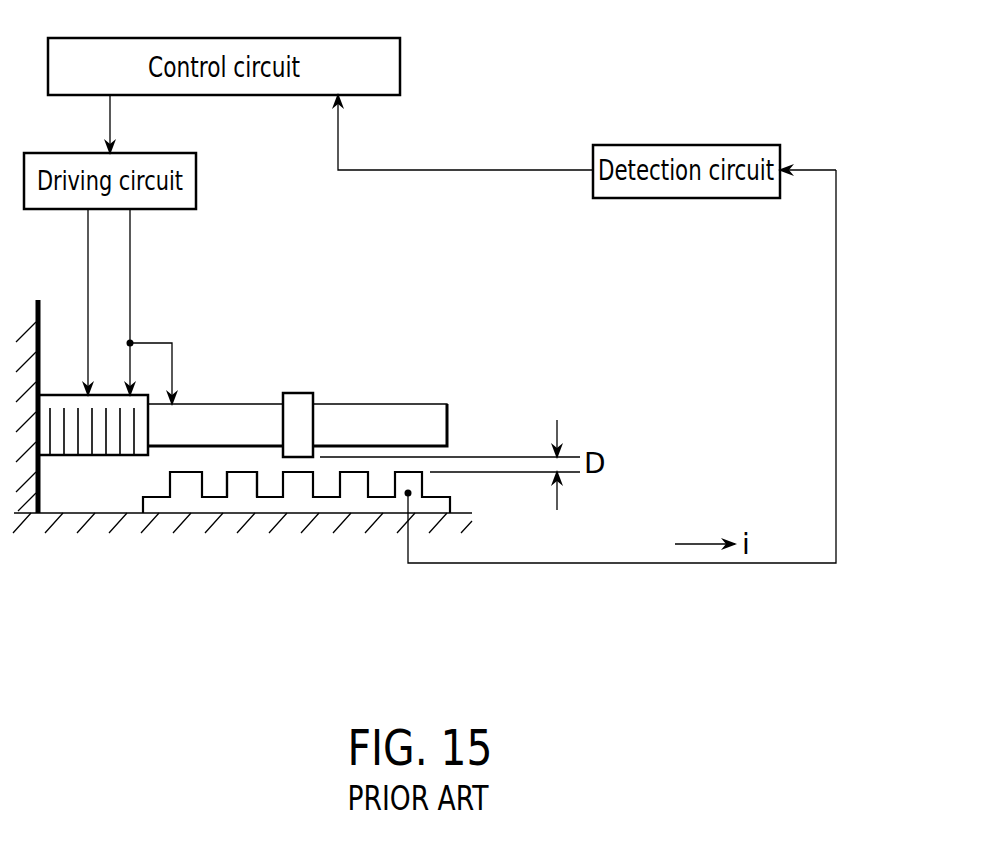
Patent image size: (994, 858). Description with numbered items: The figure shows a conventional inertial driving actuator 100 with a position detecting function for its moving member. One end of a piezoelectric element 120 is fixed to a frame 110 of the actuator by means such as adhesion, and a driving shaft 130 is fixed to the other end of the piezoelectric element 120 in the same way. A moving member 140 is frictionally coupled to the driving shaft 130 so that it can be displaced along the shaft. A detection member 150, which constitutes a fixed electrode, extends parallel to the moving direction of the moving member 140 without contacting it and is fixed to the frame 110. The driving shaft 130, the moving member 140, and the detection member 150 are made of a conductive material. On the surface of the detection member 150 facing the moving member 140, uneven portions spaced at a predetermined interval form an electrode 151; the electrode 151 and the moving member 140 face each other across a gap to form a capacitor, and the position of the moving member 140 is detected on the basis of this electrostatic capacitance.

The inertial driving actuator 100 is at (424, 430).
The frame 110 is at (62, 515).
The piezoelectric element 120 is at (43, 403).
The driving shaft 130 is at (386, 420).
The moving member 140 is at (297, 403).
The detection member 150 is at (352, 503).
The electrode 151 is at (243, 486).